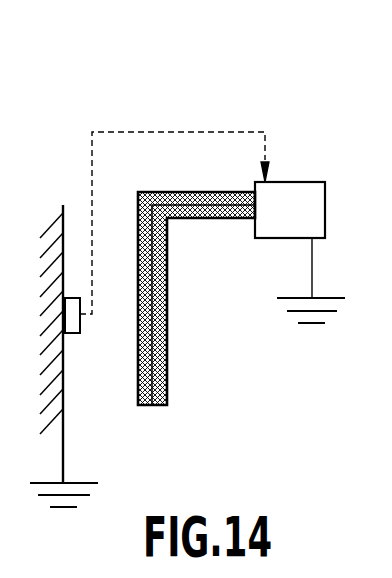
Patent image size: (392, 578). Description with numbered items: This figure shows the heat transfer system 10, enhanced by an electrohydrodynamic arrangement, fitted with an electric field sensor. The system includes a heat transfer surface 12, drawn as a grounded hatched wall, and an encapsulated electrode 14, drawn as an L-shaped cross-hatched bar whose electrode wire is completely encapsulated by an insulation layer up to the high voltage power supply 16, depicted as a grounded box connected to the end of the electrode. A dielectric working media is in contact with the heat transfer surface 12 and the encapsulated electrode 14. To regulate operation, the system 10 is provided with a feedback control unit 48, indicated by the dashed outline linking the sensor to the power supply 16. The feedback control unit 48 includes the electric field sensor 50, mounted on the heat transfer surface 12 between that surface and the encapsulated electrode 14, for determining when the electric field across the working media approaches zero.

The heat transfer system 10 is at (232, 400).
The heat transfer surface 12 is at (64, 210).
The encapsulated electrode 14 is at (167, 275).
The high voltage power supply 16 is at (317, 202).
The feedback control unit 48 is at (142, 124).
The electric field sensor 50 is at (72, 333).